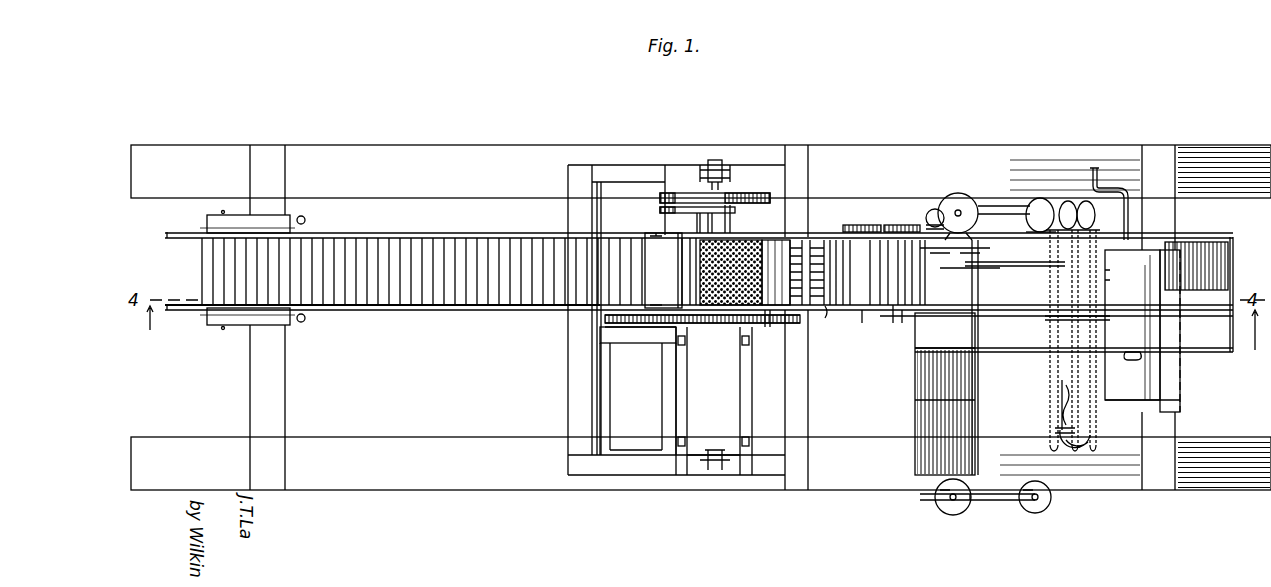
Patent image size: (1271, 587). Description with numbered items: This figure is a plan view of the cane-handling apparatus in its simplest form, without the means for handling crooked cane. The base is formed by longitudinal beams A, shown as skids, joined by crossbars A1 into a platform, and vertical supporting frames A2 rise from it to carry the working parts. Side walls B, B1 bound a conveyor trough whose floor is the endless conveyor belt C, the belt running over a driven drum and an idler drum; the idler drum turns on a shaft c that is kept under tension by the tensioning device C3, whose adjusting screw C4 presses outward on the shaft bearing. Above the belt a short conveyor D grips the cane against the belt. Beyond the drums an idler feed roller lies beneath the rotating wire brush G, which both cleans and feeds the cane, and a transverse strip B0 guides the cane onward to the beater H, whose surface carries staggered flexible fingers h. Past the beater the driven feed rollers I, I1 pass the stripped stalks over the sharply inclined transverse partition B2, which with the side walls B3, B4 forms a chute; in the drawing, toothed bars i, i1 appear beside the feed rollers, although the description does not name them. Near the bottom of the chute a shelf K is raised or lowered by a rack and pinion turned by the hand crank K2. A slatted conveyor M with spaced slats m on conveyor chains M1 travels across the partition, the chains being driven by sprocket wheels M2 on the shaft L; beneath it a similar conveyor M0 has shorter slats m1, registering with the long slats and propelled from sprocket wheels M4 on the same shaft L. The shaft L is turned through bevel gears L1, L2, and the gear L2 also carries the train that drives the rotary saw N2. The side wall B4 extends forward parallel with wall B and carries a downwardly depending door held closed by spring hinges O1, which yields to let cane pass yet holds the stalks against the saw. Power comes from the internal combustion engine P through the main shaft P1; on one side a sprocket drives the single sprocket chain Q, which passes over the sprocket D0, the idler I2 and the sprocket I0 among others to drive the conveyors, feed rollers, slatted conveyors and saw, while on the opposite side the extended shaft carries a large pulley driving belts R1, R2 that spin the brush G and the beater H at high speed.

The longitudinal beams A is at (324, 150).
The crossbars A1 is at (275, 150).
The vertical supporting frames A2 is at (580, 165).
The side wall of conveyor trough B is at (399, 232).
The transverse strip B0 is at (776, 330).
The side wall of conveyor trough B1 is at (392, 310).
The transverse partition B2 is at (915, 414).
The side wall of chute B3 is at (1232, 237).
The side wall of chute B4 is at (1210, 350).
The endless conveyor belt C is at (372, 292).
The shaft c is at (224, 330).
The tensioning device C3 is at (303, 345).
The adjusting screw C4 is at (305, 216).
The short conveyor D is at (620, 280).
The sprocket wheel D0 is at (605, 318).
The brush G is at (700, 271).
The beater H is at (850, 322).
The fingers h is at (790, 278).
The feed roller I is at (882, 240).
The toothed bar i is at (860, 225).
The toothed bar i1 is at (900, 225).
The sprocket I0 is at (895, 322).
The feed roller I1 is at (908, 318).
The idler I2 is at (864, 330).
The shelf K is at (1160, 300).
The hand crank K2 is at (1100, 170).
The shaft L is at (1000, 206).
The bevel gear L1 is at (955, 194).
The bevel gear L2 is at (935, 210).
The slatted conveyor M is at (975, 282).
The lower slatted conveyor M0 is at (1108, 270).
The conveyor chains M1 is at (985, 250).
The sprocket wheels M2 is at (1040, 198).
The sprocket wheels M4 is at (1082, 200).
The slats m is at (1025, 277).
The shorter slats m1 is at (1100, 318).
The rotary saw N2 is at (1060, 392).
The spring hinges O1 is at (1140, 360).
The internal combustion engine P is at (690, 397).
The main shaft P1 is at (722, 160).
The sprocket chain Q is at (826, 322).
The belt R1 is at (752, 193).
The belt R2 is at (818, 207).